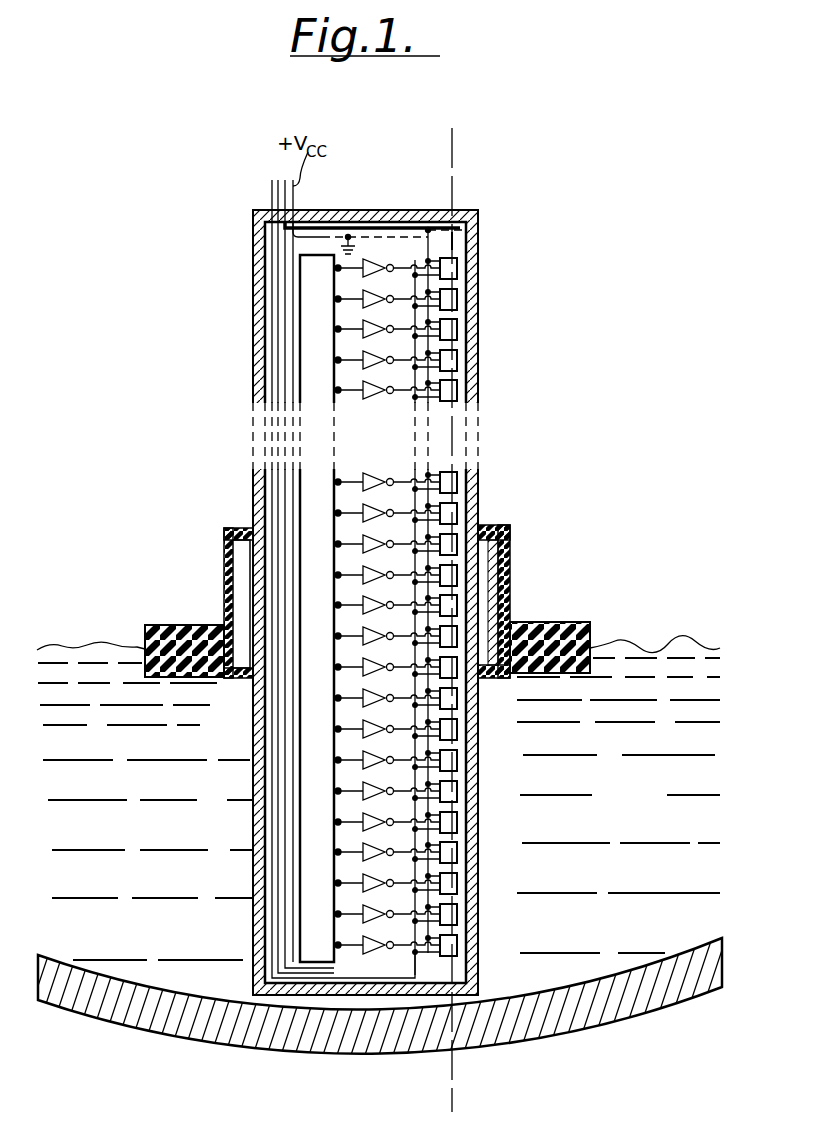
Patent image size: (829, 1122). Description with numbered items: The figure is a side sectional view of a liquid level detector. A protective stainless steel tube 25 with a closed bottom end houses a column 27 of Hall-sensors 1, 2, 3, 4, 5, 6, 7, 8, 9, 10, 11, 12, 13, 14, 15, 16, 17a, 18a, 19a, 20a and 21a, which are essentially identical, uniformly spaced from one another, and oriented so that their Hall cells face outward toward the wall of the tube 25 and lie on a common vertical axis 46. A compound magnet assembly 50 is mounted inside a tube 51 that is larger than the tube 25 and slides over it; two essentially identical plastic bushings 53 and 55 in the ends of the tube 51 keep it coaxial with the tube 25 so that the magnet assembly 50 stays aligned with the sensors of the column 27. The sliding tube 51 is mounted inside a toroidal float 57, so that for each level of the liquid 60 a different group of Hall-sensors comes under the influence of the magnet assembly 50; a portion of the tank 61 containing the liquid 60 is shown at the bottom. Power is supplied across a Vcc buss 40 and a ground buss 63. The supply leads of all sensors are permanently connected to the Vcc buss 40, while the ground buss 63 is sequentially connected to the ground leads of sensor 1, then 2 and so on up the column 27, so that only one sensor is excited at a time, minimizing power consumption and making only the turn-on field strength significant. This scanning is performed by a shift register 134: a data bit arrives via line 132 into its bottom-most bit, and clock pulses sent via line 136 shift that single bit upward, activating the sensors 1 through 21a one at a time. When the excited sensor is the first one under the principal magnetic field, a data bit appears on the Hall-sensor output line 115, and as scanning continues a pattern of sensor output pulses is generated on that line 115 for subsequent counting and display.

The Hall-sensor 1 is at (457, 945).
The Hall-sensor 2 is at (457, 914).
The Hall-sensor 3 is at (457, 883).
The Hall-sensor 4 is at (457, 852).
The Hall-sensor 5 is at (457, 822).
The Hall-sensor 6 is at (457, 791).
The Hall-sensor 7 is at (457, 760).
The Hall-sensor 8 is at (457, 729).
The Hall-sensor 9 is at (457, 698).
The Hall-sensor 10 is at (395, 659).
The Hall-sensor 11 is at (395, 628).
The Hall-sensor 12 is at (395, 597).
The Hall-sensor 13 is at (395, 567).
The Hall-sensor 14 is at (395, 536).
The Hall-sensor 15 is at (457, 513).
The Hall-sensor 16 is at (457, 482).
The Hall-sensor 17a is at (457, 390).
The Hall-sensor 18a is at (457, 360).
The Hall-sensor 19a is at (457, 329).
The Hall-sensor 20a is at (457, 299).
The Hall-sensor 21a is at (457, 268).
The protective stainless steel tube 25 is at (258, 815).
The column of Hall-sensors 27 is at (452, 246).
The Vcc buss 40 is at (376, 214).
The common vertical axis 46 is at (452, 170).
The compound magnet assembly 50 is at (498, 530).
The tube 51 is at (226, 546).
The plastic bushing 53 is at (250, 528).
The plastic bushing 55 is at (248, 679).
The toroidal float 57 is at (148, 628).
The liquid 60 is at (652, 804).
The tank 61 is at (662, 993).
The ground buss 63 is at (311, 223).
The Hall-sensor output line 115 is at (265, 347).
The line 132 is at (290, 268).
The shift register 134 is at (322, 390).
The line 136 is at (278, 302).